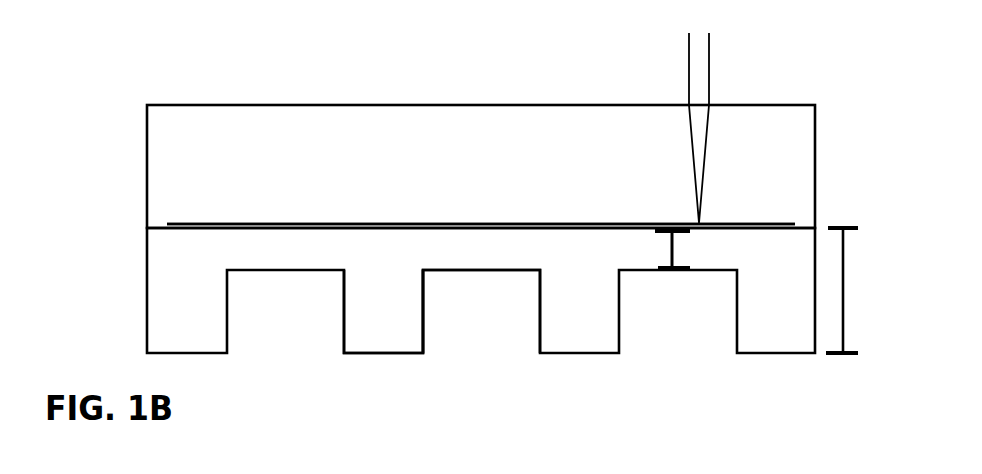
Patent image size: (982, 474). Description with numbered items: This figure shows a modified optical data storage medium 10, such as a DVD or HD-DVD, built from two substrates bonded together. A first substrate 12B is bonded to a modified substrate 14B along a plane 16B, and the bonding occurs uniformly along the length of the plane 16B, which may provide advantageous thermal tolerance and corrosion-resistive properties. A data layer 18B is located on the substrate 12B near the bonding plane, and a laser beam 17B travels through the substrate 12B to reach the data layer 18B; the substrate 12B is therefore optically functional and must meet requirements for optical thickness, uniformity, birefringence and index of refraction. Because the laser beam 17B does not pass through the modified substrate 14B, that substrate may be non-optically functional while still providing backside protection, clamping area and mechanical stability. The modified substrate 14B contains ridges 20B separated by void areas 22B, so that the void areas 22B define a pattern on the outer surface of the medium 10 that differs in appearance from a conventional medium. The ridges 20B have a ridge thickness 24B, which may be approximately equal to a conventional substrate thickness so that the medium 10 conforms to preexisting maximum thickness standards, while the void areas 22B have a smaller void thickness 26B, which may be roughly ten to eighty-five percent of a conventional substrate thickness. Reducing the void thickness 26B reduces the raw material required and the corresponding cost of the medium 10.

The modified optical data storage medium 10 is at (290, 74).
The substrate 12B is at (147, 162).
The modified substrate 14B is at (147, 306).
The plane 16B is at (147, 228).
The laser beam 17B is at (689, 65).
The data layer 18B is at (793, 224).
The ridge 20B is at (371, 313).
The void area 22B is at (487, 334).
The ridge thickness 24B is at (843, 338).
The void thickness 26B is at (668, 250).